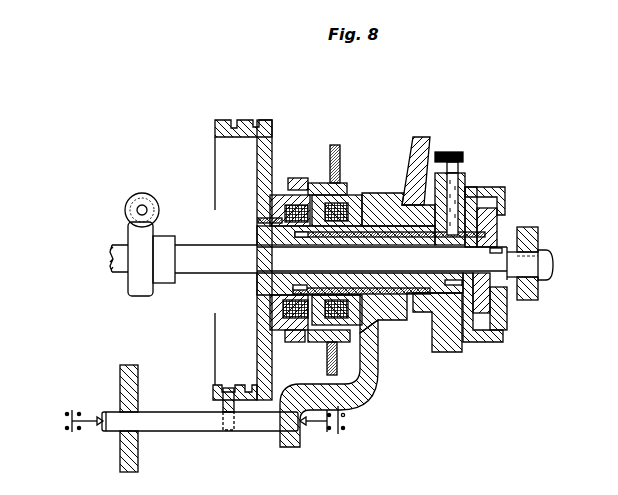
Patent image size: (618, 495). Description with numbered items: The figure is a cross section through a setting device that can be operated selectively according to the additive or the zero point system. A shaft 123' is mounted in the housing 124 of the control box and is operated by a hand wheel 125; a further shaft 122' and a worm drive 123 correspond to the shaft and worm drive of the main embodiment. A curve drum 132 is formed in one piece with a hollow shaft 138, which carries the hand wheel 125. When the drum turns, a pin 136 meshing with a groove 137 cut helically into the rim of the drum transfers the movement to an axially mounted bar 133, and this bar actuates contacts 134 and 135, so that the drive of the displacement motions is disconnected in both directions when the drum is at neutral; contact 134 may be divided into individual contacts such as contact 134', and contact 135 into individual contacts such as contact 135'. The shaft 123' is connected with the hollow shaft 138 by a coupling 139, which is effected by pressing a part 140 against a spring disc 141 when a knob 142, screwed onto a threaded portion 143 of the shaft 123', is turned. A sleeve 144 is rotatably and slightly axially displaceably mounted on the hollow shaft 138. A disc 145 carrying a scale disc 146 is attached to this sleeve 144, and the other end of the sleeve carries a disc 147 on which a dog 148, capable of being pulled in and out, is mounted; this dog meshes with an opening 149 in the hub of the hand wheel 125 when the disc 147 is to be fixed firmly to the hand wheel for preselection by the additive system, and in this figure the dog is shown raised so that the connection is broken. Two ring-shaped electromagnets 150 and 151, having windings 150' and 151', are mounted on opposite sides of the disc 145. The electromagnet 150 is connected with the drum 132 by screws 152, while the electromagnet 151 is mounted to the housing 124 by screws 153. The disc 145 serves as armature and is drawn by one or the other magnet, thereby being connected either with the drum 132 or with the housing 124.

The shaft 122' is at (152, 226).
The worm drive 123 is at (179, 239).
The shaft 123' is at (183, 281).
The housing 124 is at (412, 137).
The hand wheel 125 is at (503, 189).
The curve drum 132 is at (265, 120).
The bar 133 is at (177, 420).
The contact 134 is at (331, 442).
The contact 134' is at (311, 442).
The contact 135 is at (83, 444).
The contact 135' is at (95, 403).
The pin 136 is at (233, 400).
The groove 137 is at (255, 122).
The hollow shaft 138 is at (383, 244).
The coupling 139 is at (495, 218).
The part 140 is at (507, 313).
The spring disc 141 is at (478, 332).
The knob 142 is at (540, 245).
The threaded portion 143 is at (530, 265).
The sleeve 144 is at (337, 245).
The disc 145 is at (338, 178).
The scale disc 146 is at (334, 150).
The disc 147 is at (447, 335).
The dog 148 is at (450, 222).
The opening 149 is at (480, 187).
The electromagnet 150 is at (291, 181).
The winding 150' is at (292, 333).
The electromagnet 151 is at (348, 185).
The winding 151' is at (342, 335).
The screws 152 is at (256, 219).
The screws 153 is at (377, 218).